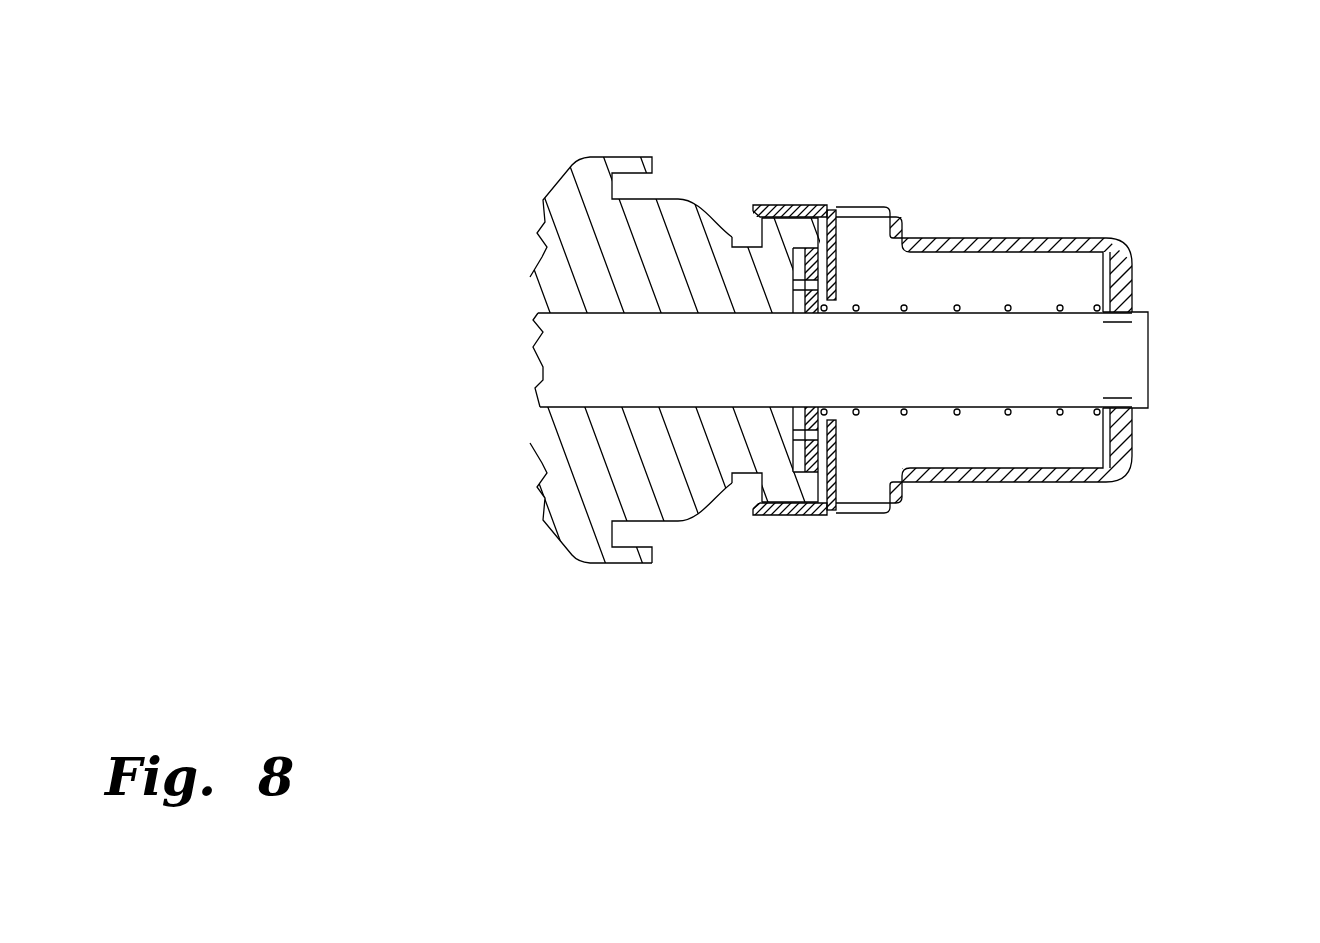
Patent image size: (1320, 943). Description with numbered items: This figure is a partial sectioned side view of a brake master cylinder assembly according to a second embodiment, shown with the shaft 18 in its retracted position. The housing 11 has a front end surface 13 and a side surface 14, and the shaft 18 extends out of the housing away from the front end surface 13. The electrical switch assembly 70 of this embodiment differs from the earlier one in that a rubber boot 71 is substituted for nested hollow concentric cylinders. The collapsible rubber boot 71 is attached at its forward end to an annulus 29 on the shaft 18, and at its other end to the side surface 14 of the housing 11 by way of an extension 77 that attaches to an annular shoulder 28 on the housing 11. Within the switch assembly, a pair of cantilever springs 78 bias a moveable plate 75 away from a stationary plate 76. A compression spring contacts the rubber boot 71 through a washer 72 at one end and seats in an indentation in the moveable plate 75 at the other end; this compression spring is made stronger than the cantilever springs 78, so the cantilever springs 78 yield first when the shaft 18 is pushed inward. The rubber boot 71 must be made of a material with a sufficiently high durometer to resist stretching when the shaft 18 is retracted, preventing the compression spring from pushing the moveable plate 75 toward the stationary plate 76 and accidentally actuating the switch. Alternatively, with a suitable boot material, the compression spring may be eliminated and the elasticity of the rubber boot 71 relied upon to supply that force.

The housing 11 is at (562, 545).
The front end surface 13 is at (837, 266).
The side surface 14 is at (651, 523).
The shaft 18 is at (987, 410).
The annular shoulder 28 is at (760, 230).
The annulus 29 is at (1128, 372).
The electrical switch assembly 70 is at (1030, 200).
The rubber boot 71 is at (1017, 482).
The washer 72 is at (1100, 450).
The moveable plate 75 is at (837, 463).
The stationary plate 76 is at (796, 470).
The extension 77 is at (778, 210).
The cantilever springs 78 is at (820, 280).